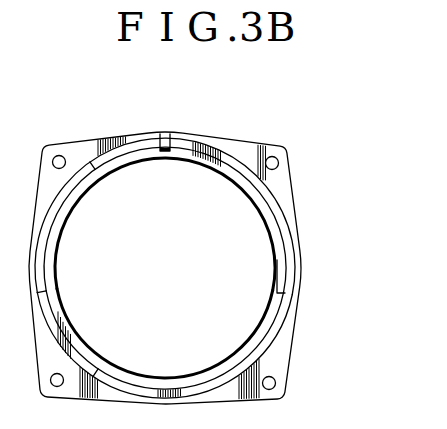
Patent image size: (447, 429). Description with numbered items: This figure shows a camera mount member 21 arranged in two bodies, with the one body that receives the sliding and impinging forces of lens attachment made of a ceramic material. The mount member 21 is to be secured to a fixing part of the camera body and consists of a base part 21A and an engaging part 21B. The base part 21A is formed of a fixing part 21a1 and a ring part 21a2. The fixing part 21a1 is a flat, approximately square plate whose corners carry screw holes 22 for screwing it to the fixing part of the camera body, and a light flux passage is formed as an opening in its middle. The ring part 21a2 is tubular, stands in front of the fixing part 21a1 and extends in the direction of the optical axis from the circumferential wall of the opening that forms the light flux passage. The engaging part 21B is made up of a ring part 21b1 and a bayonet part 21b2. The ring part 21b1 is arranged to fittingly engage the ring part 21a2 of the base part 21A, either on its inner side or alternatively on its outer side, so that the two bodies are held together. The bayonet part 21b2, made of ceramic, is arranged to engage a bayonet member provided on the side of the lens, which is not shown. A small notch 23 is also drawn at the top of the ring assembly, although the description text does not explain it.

The mount member 21 is at (217, 229).
The base part 21A is at (217, 216).
The engaging part 21B is at (218, 327).
The fixing part 21a1 is at (284, 182).
The ring part 21a2 is at (268, 203).
The ring part 21b1 is at (280, 262).
The bayonet part 21b2 is at (282, 309).
The screw holes 22 is at (59, 155).
The notch 23 is at (165, 153).